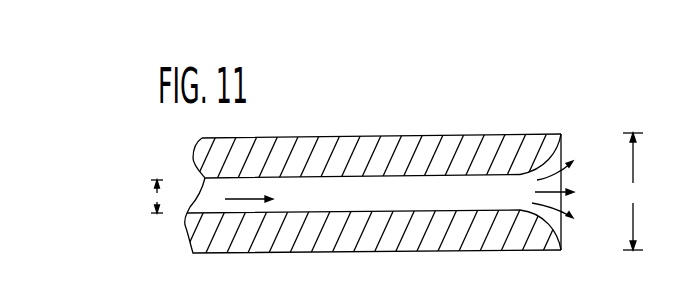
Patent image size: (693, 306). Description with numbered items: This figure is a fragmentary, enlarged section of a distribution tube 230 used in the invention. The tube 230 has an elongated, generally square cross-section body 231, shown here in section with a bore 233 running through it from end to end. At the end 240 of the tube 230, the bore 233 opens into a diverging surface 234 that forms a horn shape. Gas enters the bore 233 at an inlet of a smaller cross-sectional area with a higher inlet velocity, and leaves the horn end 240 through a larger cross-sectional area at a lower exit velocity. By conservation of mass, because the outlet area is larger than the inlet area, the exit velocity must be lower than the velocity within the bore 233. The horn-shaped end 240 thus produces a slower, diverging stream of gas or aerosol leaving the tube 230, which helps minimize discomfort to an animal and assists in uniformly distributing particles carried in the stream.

The distribution tube 230 is at (446, 97).
The body 231 is at (301, 138).
The bore 233 is at (185, 208).
The diverging surface 234 is at (558, 159).
The end 240 is at (561, 135).